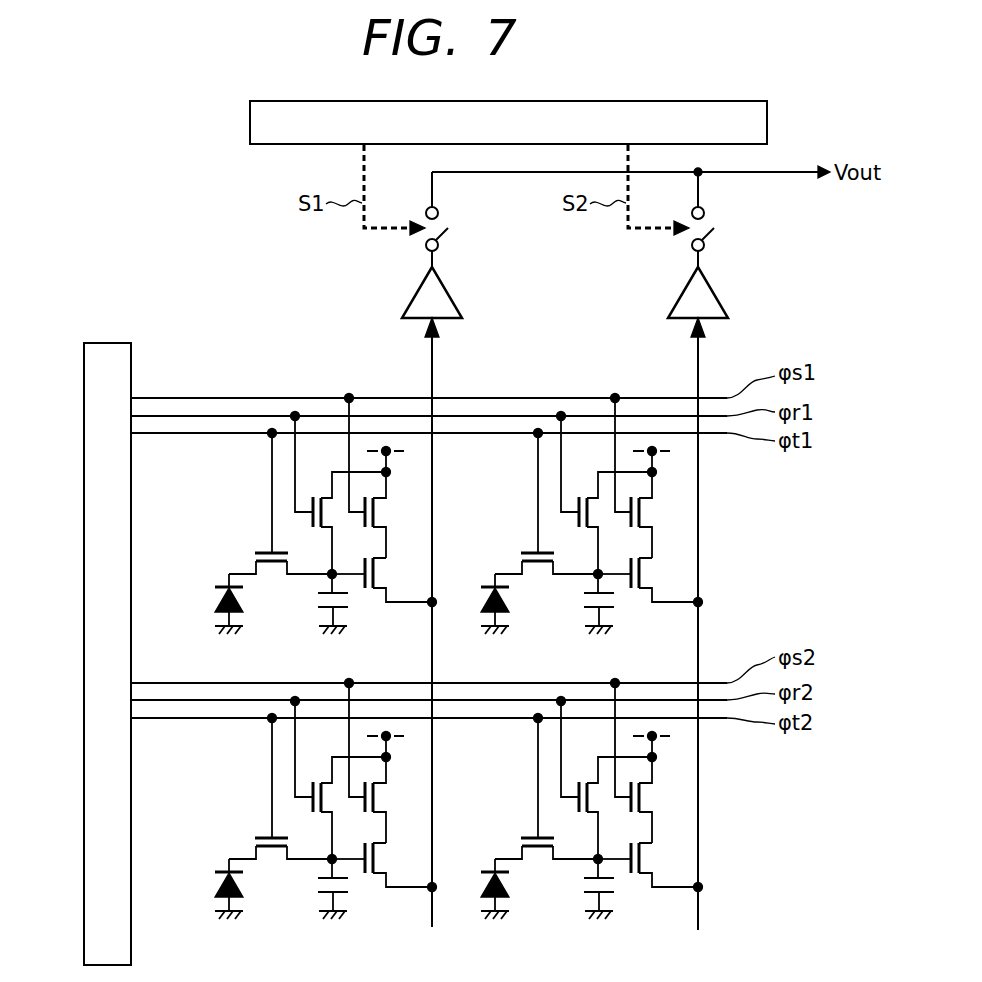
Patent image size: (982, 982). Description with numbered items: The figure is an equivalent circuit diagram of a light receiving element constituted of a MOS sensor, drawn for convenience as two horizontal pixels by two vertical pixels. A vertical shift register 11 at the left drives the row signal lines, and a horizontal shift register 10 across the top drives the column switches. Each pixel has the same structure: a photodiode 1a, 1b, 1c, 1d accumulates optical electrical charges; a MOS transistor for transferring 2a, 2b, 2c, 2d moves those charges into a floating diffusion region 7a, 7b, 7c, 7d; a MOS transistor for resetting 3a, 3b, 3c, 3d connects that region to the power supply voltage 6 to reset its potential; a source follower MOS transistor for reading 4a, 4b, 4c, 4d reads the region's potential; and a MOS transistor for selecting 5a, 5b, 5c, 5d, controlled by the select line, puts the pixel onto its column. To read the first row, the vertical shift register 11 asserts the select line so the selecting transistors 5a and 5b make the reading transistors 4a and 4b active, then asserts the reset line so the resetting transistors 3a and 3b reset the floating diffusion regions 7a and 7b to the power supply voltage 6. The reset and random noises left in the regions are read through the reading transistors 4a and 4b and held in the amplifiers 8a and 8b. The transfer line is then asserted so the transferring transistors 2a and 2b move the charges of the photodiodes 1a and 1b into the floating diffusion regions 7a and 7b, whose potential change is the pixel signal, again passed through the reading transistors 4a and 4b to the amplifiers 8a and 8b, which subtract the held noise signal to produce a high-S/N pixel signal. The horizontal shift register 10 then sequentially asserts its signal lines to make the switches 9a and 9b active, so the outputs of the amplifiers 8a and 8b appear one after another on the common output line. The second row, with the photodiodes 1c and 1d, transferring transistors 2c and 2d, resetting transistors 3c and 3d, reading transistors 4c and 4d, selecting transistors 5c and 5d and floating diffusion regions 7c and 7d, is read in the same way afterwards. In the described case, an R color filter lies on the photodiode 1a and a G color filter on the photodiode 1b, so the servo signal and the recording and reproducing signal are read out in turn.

The horizontal shift register 10 is at (250, 118).
The vertical shift register 11 is at (131, 352).
The amplifier 8a is at (412, 296).
The amplifier 8b is at (677, 296).
The switch 9a is at (450, 227).
The switch 9b is at (716, 227).
The power supply voltage 6 is at (386, 448).
The photodiode 1a is at (216, 604).
The photodiode 1b is at (503, 594).
The photodiode 1c is at (242, 880).
The photodiode 1d is at (503, 878).
The MOS transistor for transferring 2a is at (253, 553).
The MOS transistor for transferring 2b is at (519, 553).
The MOS transistor for transferring 2c is at (252, 838).
The MOS transistor for transferring 2d is at (519, 838).
The MOS transistor for resetting 3a is at (320, 532).
The MOS transistor for resetting 3b is at (584, 532).
The MOS transistor for resetting 3c is at (320, 816).
The MOS transistor for resetting 3d is at (582, 816).
The source follower MOS transistor for reading 4a is at (381, 571).
The source follower MOS transistor for reading 4b is at (650, 571).
The source follower MOS transistor for reading 4c is at (379, 858).
The source follower MOS transistor for reading 4d is at (650, 856).
The MOS transistor for selecting 5a is at (381, 510).
The MOS transistor for selecting 5b is at (650, 508).
The MOS transistor for selecting 5c is at (379, 800).
The MOS transistor for selecting 5d is at (650, 794).
The floating diffusion region 7a is at (318, 597).
The floating diffusion region 7b is at (581, 602).
The floating diffusion region 7c is at (316, 886).
The floating diffusion region 7d is at (579, 890).